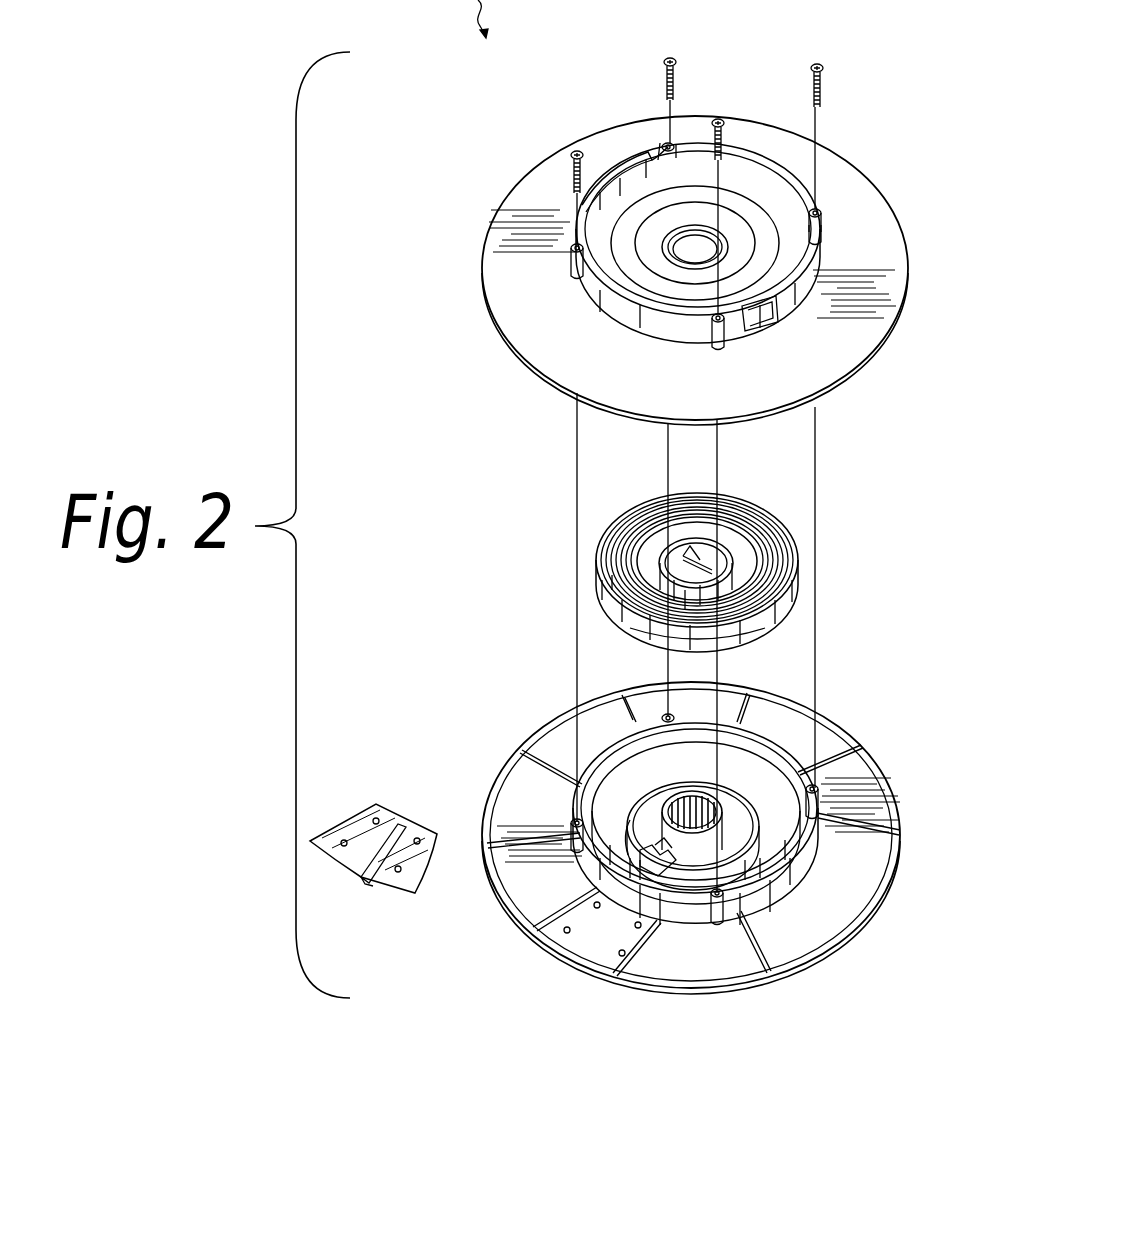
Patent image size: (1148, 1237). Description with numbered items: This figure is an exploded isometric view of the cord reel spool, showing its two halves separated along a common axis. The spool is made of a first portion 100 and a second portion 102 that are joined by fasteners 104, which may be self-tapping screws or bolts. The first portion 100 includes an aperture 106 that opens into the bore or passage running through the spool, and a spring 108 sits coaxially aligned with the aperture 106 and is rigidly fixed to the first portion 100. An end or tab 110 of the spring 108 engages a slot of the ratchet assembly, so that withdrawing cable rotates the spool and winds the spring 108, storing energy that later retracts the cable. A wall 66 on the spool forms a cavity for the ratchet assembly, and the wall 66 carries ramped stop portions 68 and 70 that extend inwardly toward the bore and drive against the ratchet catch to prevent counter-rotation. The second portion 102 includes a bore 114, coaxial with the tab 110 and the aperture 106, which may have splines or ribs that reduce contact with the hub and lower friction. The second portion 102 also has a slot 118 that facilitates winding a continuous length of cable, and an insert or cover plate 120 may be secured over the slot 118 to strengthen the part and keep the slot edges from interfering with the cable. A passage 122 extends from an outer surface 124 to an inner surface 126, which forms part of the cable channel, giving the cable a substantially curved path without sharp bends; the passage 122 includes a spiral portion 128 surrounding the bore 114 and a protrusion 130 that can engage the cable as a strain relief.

The wall 66 is at (812, 267).
The ramped stop portion 68 is at (760, 303).
The ramped stop portion 70 is at (628, 158).
The first portion 100 is at (835, 152).
The second portion 102 is at (885, 770).
The fasteners 104 is at (577, 152).
The aperture 106 is at (690, 254).
The spring 108 is at (757, 505).
The tab 110 is at (668, 552).
The bore 114 is at (717, 800).
The slot 118 is at (660, 862).
The cover plate 120 is at (376, 804).
The passage 122 is at (661, 858).
The outer surface 124 is at (822, 960).
The inner surface 126 is at (863, 872).
The spiral portion 128 is at (742, 812).
The protrusion 130 is at (655, 788).